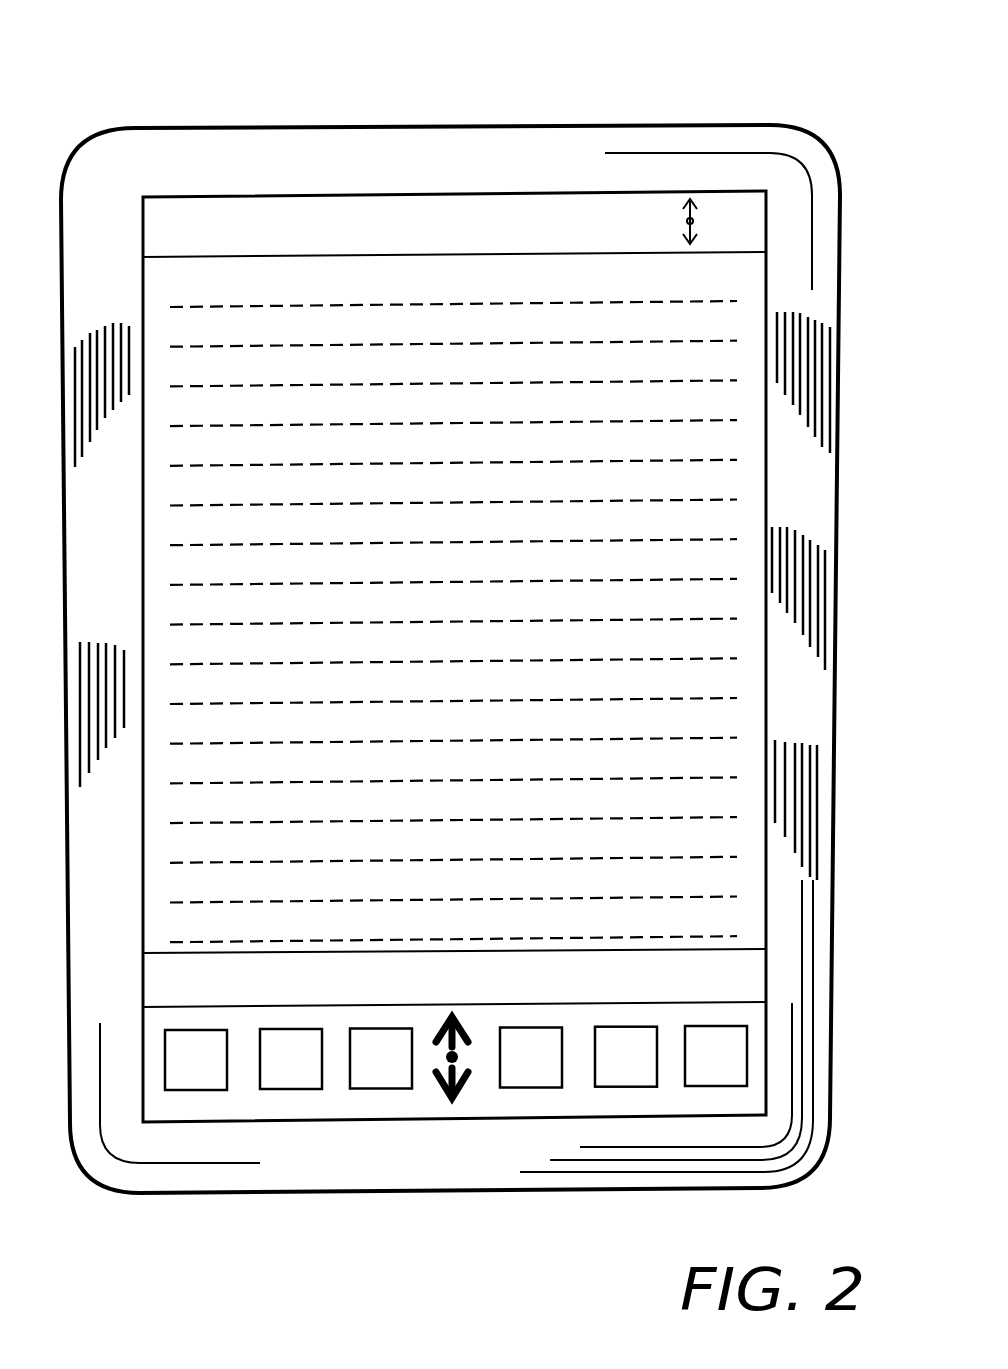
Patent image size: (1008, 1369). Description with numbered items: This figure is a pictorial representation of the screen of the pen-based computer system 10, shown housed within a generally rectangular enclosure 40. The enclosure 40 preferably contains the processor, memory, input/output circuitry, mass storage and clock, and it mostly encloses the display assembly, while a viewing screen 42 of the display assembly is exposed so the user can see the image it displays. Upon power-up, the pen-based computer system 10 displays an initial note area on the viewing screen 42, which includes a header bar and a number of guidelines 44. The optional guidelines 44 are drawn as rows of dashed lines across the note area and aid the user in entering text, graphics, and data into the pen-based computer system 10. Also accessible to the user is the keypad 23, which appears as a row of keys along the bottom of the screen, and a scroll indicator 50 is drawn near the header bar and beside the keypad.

The pen-based computer system 10 is at (783, 78).
The enclosure 40 is at (793, 510).
The guidelines 44 is at (700, 418).
The viewing screen 42 is at (700, 752).
The scroll indicator 50 is at (693, 208).
The keypad 23 is at (743, 1103).